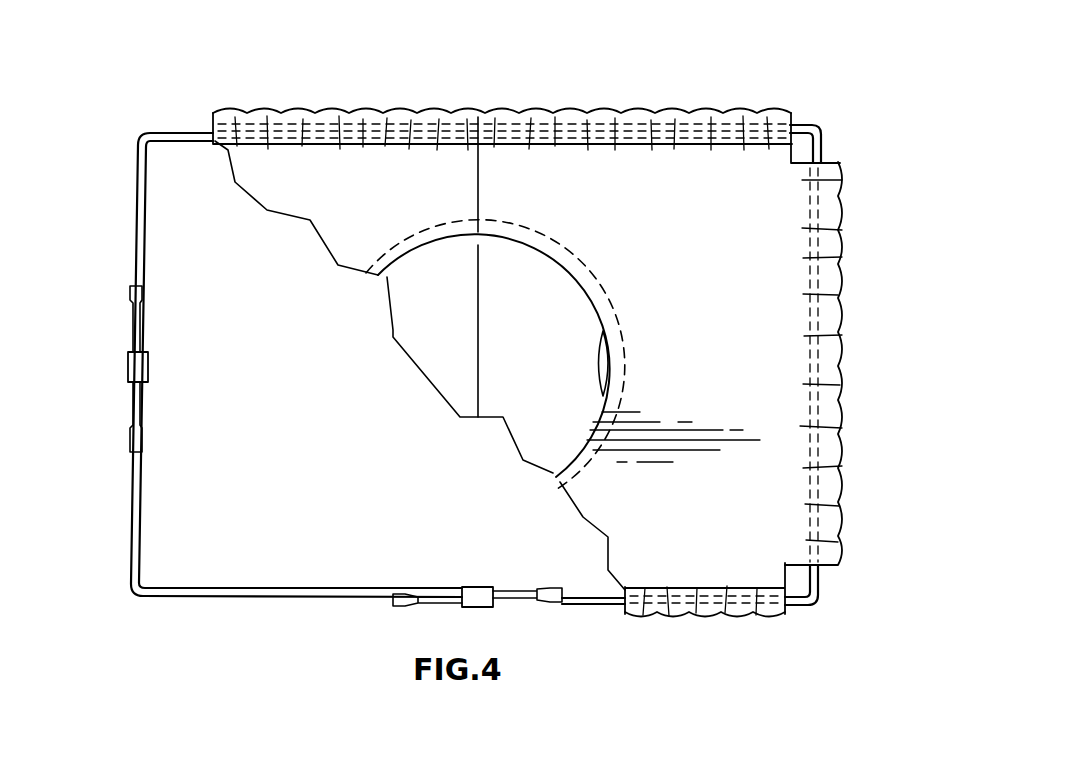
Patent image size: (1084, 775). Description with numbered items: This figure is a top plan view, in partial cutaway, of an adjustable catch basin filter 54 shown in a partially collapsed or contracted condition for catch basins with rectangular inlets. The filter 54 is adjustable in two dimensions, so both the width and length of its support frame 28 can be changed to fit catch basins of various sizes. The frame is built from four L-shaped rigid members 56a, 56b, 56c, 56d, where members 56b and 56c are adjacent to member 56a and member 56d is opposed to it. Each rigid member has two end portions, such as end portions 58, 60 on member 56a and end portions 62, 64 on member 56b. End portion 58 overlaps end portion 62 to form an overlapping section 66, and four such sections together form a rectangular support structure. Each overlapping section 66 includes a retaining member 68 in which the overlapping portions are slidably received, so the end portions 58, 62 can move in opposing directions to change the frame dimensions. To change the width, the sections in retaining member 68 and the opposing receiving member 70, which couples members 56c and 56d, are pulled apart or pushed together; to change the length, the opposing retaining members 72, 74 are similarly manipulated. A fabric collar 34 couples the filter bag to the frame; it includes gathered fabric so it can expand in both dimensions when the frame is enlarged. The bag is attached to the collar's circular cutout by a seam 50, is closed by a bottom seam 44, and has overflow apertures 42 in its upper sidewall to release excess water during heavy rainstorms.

The support frame 28 is at (134, 151).
The collar 34 is at (722, 311).
The overflow apertures 42 is at (596, 364).
The bottom seam 44 is at (480, 300).
The seam 50 is at (590, 246).
The adjustable catch basin filter 54 is at (175, 616).
The L-shaped rigid member 56a is at (138, 540).
The L-shaped rigid member 56b is at (147, 211).
The L-shaped rigid member 56c is at (826, 580).
The L-shaped rigid member 56d is at (824, 133).
The end portion 58 is at (143, 326).
The end portion 60 is at (508, 588).
The end portion 62 is at (145, 400).
The end portion 64 is at (430, 148).
The overlapping section 66 is at (115, 273).
The retaining member 68 is at (158, 371).
The receiving member 70 is at (797, 368).
The retaining member 72 is at (460, 581).
The retaining member 74 is at (497, 116).